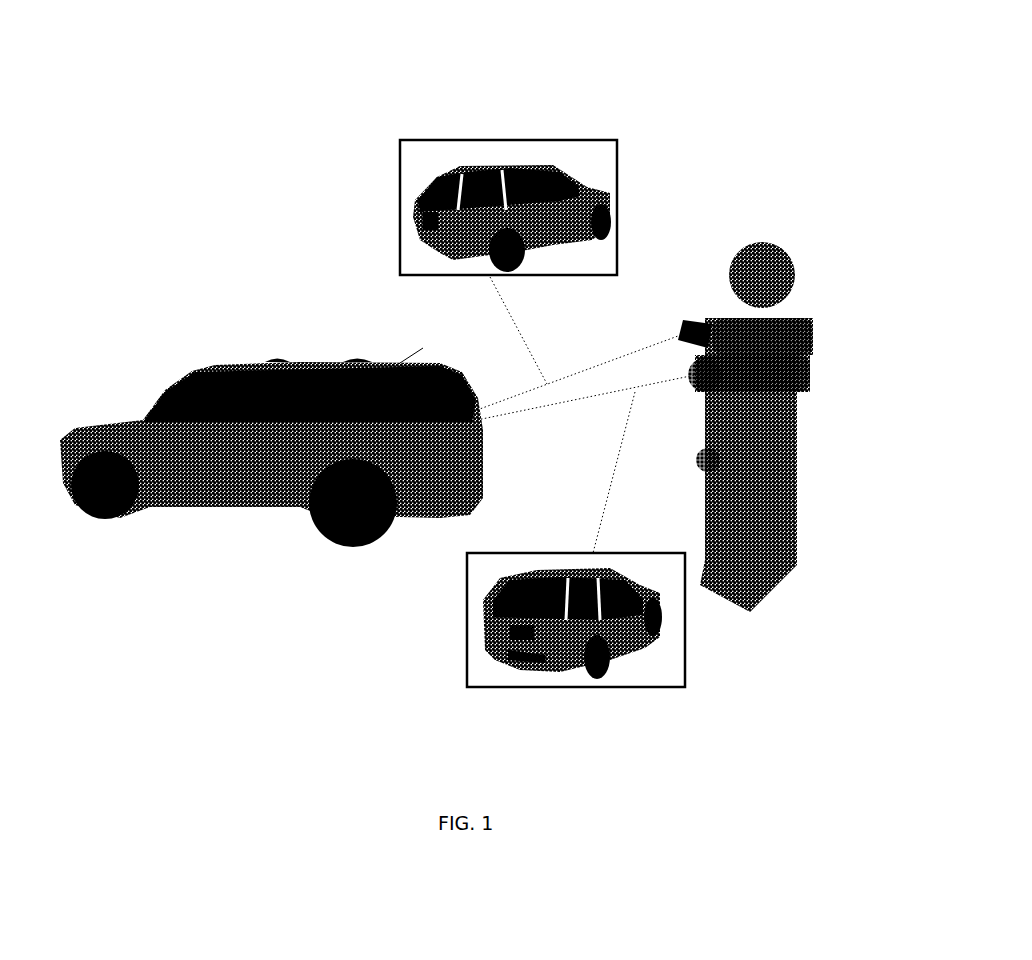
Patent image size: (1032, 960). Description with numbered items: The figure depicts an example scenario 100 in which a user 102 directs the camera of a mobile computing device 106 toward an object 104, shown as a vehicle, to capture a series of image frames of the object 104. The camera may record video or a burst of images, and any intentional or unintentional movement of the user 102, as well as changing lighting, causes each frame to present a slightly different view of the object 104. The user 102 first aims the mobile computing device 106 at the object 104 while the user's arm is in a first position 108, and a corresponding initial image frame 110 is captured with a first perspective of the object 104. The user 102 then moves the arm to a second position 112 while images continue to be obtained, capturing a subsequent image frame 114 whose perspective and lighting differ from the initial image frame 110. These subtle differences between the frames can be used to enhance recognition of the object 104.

The example scenario 100 is at (474, 38).
The user 102 is at (767, 532).
The object 104 is at (352, 365).
The mobile computing device 106 is at (700, 375).
The first position 108 is at (773, 338).
The initial image frame 110 is at (592, 145).
The second position 112 is at (817, 363).
The subsequent image frame 114 is at (600, 690).